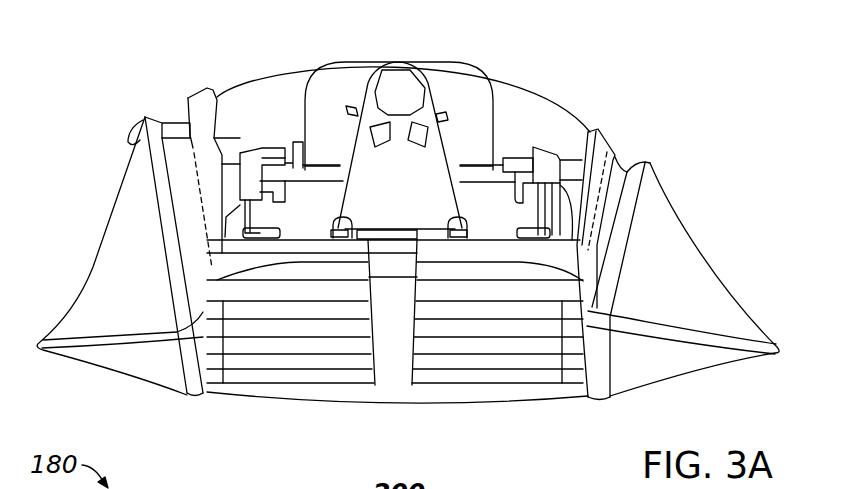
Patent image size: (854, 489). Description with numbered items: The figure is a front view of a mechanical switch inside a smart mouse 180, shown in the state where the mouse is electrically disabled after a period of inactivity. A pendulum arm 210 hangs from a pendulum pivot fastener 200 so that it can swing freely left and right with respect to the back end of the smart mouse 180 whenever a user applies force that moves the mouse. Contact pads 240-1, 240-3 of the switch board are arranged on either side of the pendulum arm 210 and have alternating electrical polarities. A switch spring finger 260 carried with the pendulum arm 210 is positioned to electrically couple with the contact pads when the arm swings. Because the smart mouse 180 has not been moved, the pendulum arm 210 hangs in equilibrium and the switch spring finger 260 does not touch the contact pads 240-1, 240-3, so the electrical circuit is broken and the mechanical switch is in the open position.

The smart mouse 180 is at (121, 33).
The pendulum pivot fastener 200 is at (398, 62).
The pendulum arm 210 is at (498, 170).
The contact pad 240-1 is at (345, 103).
The contact pad 240-3 is at (447, 112).
The switch spring finger 260 is at (362, 137).